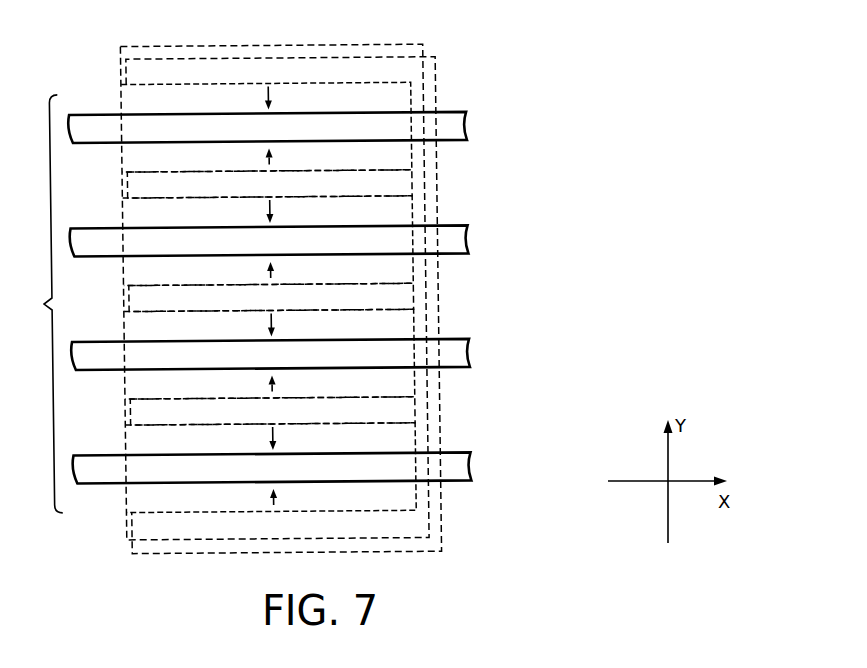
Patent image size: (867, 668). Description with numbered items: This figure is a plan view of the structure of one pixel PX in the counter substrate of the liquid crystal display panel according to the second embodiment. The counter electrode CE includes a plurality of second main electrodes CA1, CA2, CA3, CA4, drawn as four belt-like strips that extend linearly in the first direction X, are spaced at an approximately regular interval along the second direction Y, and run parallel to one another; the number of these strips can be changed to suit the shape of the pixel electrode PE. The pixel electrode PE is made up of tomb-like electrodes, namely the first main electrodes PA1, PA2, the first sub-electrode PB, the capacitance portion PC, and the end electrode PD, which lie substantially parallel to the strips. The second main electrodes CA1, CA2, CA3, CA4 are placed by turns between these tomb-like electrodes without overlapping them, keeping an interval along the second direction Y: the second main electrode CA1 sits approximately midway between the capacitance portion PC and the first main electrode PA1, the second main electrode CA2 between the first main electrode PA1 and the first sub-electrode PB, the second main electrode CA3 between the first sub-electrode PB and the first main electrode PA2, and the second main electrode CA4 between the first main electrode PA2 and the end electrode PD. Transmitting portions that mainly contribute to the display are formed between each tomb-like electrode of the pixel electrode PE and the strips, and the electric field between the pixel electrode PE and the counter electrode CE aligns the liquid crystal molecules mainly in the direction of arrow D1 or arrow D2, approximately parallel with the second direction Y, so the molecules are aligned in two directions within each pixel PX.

The pixel PX is at (118, 73).
The pixel electrode PE is at (449, 66).
The end electrode PD is at (124, 525).
The capacitance portion PC is at (208, 90).
The first main electrode PA1 is at (210, 204).
The first sub-electrode PB is at (208, 317).
The first main electrode PA2 is at (210, 431).
The counter electrode CE is at (272, 302).
The second main electrode CA1 is at (470, 128).
The second main electrode CA2 is at (470, 242).
The second main electrode CA3 is at (470, 355).
The second main electrode CA4 is at (470, 469).
The arrow D1 is at (296, 436).
The arrow D2 is at (296, 500).